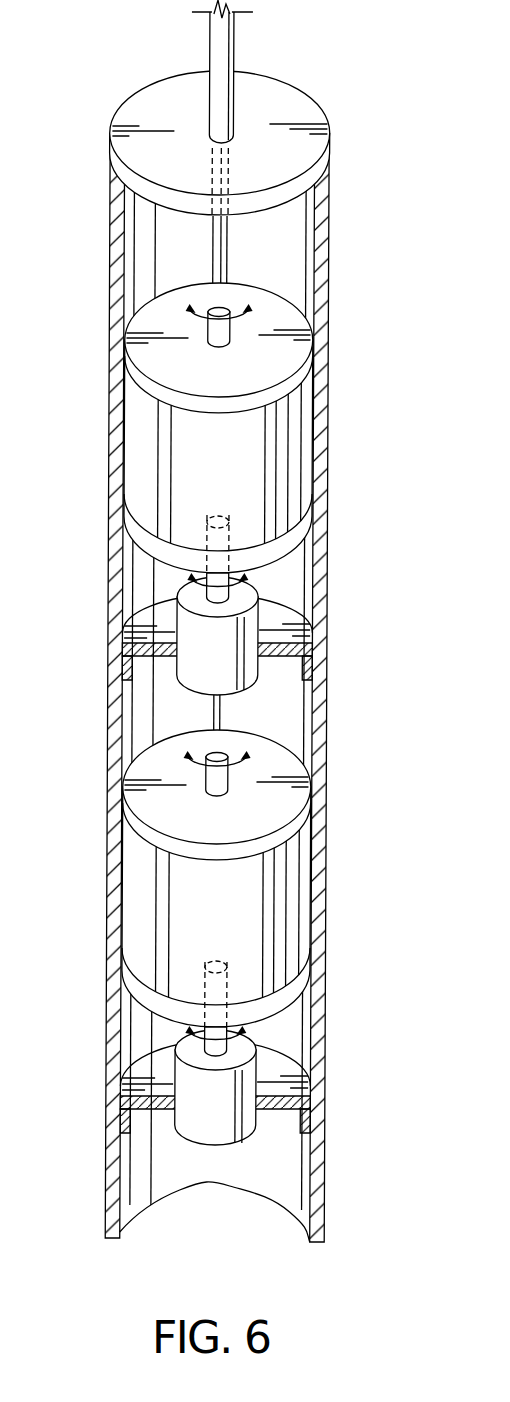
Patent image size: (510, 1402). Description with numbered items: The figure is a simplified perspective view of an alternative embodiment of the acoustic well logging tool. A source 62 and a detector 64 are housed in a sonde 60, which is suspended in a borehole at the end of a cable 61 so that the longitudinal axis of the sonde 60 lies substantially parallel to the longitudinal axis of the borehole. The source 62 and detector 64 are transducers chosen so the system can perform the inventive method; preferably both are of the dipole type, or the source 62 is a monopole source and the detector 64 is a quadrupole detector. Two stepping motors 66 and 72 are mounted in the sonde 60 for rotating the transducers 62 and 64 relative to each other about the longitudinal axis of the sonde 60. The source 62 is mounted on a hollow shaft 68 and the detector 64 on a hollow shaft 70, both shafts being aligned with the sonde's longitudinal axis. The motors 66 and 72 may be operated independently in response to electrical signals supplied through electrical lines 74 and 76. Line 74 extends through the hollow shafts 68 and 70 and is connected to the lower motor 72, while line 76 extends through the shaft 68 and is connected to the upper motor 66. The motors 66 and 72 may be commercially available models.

The sonde 60 is at (111, 398).
The cable 61 is at (218, 52).
The source 62 is at (199, 475).
The detector 64 is at (199, 913).
The stepping motor 66 is at (208, 638).
The hollow shaft 68 is at (220, 583).
The hollow shaft 70 is at (220, 1037).
The stepping motor 72 is at (205, 1113).
The electrical line 74 is at (216, 260).
The electrical line 76 is at (232, 250).